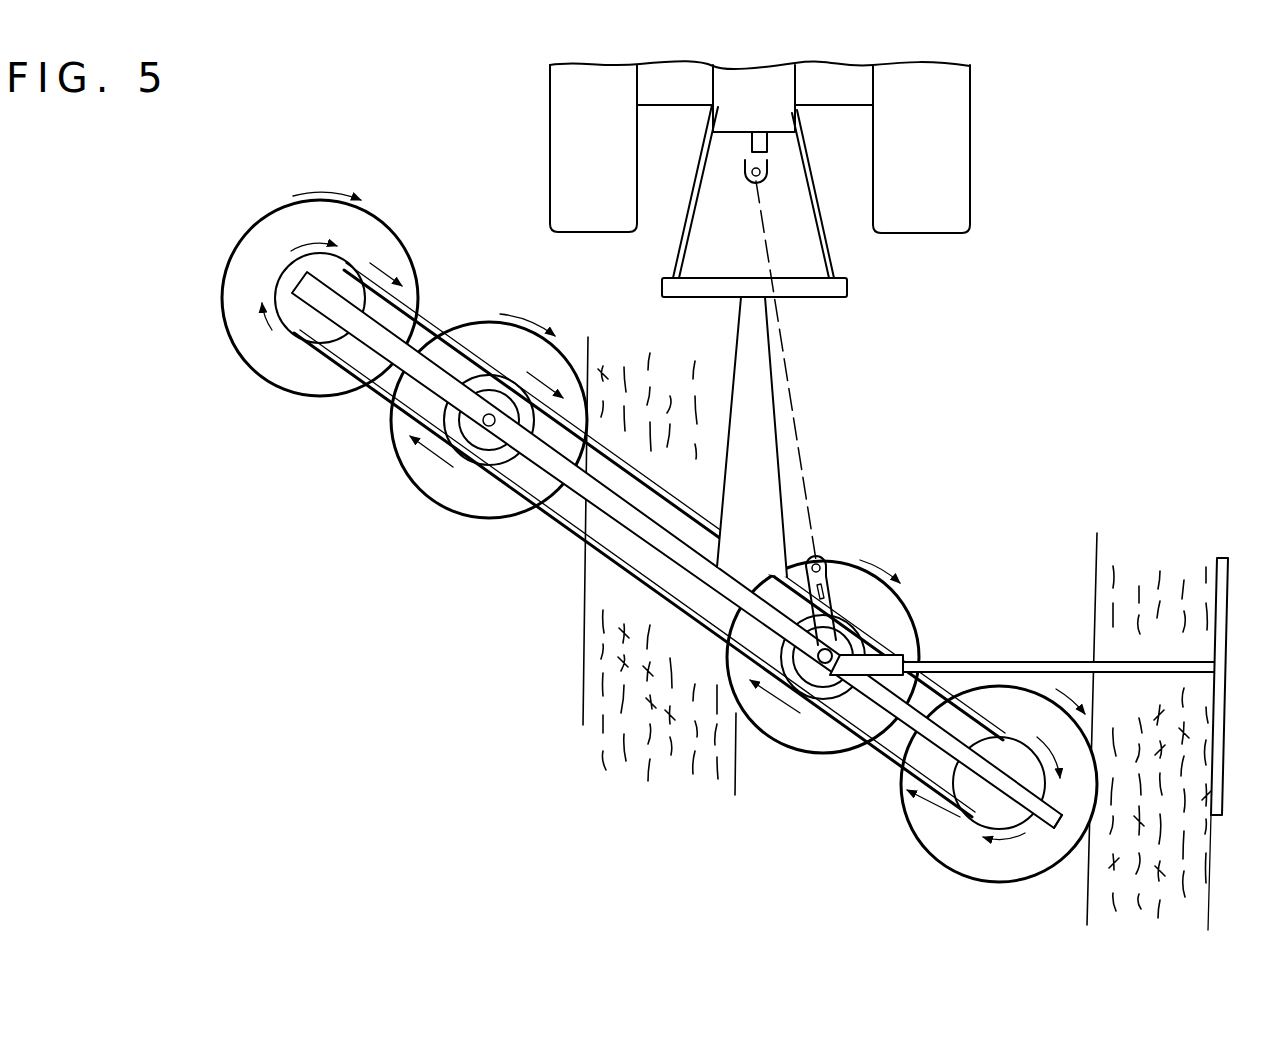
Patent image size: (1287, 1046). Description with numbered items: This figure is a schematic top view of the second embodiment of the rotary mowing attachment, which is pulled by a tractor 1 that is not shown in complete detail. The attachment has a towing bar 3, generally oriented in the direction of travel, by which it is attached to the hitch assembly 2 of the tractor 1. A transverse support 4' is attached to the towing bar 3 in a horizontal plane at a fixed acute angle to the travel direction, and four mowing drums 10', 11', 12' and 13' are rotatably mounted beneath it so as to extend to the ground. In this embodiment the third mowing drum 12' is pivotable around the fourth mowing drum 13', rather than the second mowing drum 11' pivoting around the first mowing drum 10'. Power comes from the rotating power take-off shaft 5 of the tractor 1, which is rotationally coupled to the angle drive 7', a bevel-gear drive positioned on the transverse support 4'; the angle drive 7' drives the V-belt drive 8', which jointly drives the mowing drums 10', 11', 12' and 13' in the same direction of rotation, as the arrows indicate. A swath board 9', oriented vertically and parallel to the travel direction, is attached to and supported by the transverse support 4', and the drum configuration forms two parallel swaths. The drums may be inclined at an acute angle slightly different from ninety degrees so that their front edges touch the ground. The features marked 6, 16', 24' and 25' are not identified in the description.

The tractor 1 is at (842, 73).
The hitch assembly 2 is at (667, 288).
The towing bar 3 is at (738, 385).
The transverse support 4' is at (677, 550).
The power take-off shaft 5 is at (767, 171).
The axis line 6 is at (794, 412).
The angle drive 7' is at (879, 615).
The V-belt drive 8' is at (655, 540).
The swath board 9' is at (1085, 721).
The first mowing drum 10' is at (320, 310).
The second mowing drum 11' is at (489, 433).
The third mowing drum 12' is at (823, 685).
The fourth mowing drum 13' is at (994, 788).
The beam end 16' is at (1044, 869).
The trench wall 24' is at (625, 566).
The trench wall 25' is at (1119, 729).